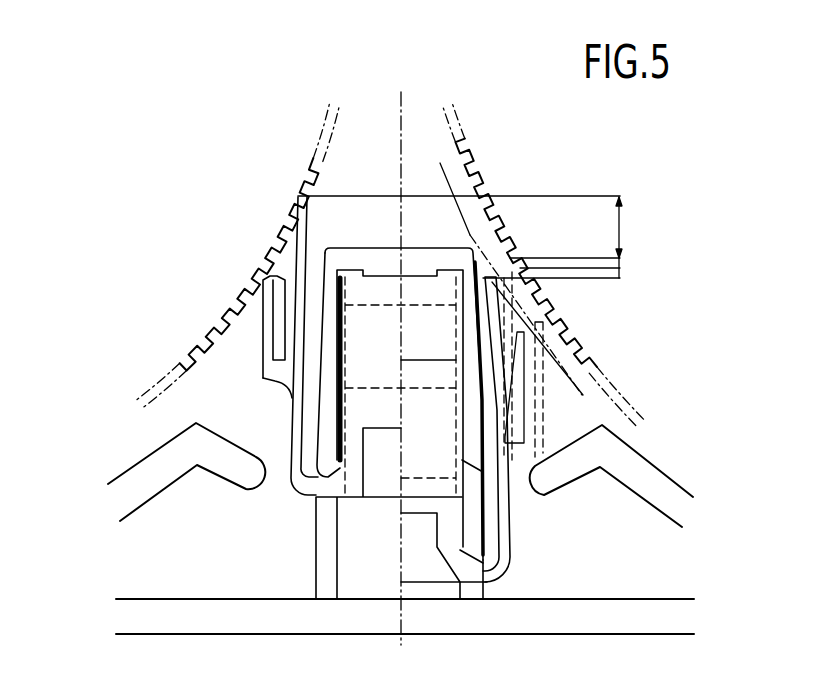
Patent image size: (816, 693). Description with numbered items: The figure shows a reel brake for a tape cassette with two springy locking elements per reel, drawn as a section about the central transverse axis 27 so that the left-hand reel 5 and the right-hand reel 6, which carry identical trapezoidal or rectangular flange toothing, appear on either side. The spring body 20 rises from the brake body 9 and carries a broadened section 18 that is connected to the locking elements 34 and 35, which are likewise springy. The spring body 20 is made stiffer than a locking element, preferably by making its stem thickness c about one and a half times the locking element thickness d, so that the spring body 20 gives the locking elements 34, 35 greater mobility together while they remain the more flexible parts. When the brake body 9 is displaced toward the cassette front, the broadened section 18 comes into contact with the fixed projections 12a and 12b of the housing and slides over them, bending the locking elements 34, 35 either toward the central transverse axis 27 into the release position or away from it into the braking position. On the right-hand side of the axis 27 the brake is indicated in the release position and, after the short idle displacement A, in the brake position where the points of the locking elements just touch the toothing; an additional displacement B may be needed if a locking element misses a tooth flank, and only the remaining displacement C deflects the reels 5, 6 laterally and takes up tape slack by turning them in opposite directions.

The central transverse axis 27 is at (401, 123).
The locking element 35 is at (300, 197).
The locking element 34 is at (262, 282).
The broadened section 18 is at (277, 380).
The spring body 20 is at (295, 448).
The brake body 9 is at (355, 463).
The left-hand reel 5 is at (182, 313).
The right-hand reel 6 is at (497, 170).
The fixed projection of the housing 12a is at (253, 482).
The fixed projection of the housing 12b is at (573, 473).
The idle displacement A is at (620, 279).
The additional displacement B is at (620, 263).
The remaining displacement C is at (620, 227).
The thickness of the stem of the spring c is at (487, 540).
The thickness of the locking element d is at (506, 395).